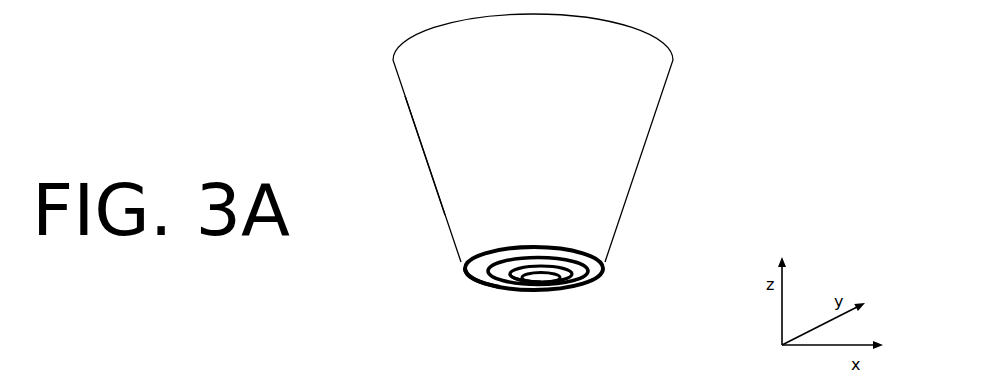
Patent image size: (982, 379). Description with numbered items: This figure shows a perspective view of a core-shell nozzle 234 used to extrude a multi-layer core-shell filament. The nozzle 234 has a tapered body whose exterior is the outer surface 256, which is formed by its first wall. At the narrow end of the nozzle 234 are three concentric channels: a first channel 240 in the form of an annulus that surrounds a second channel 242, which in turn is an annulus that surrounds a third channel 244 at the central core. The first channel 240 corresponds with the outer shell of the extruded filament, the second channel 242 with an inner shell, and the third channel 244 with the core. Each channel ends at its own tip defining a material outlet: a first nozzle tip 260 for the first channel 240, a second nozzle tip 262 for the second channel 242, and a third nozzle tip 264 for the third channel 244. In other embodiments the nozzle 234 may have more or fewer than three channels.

The core-shell nozzle 234 is at (676, 152).
The outer surface 256 is at (438, 147).
The first channel 240 is at (594, 282).
The second channel 242 is at (565, 287).
The third channel 244 is at (535, 287).
The first nozzle tip 260 is at (478, 281).
The second nozzle tip 262 is at (492, 288).
The third nozzle tip 264 is at (516, 284).